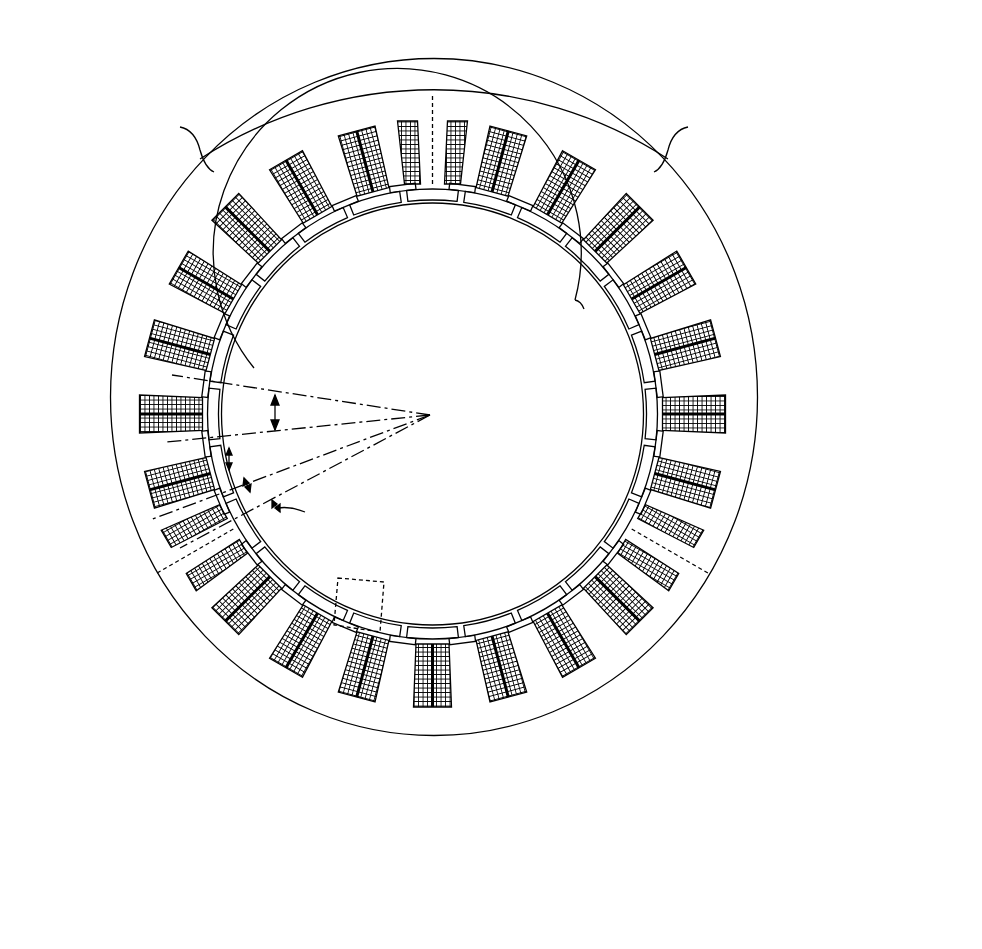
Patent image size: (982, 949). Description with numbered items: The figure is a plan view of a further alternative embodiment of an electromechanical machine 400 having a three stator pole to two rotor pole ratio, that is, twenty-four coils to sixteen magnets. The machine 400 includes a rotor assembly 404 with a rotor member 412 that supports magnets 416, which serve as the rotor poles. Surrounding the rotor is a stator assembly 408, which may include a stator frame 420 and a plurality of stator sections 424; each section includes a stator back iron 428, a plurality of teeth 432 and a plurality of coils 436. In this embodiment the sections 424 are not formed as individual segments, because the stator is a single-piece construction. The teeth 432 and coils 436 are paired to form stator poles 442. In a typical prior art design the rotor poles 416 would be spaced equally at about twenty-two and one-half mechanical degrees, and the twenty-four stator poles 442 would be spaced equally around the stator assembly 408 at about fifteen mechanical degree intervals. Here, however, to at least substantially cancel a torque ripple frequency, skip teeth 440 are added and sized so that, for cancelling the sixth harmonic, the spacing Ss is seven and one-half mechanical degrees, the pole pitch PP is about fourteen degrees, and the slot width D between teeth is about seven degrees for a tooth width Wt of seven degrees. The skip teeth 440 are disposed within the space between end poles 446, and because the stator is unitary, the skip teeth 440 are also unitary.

The machine 400 is at (607, 67).
The rotor assembly 404 is at (463, 244).
The stator assembly 408 is at (682, 152).
The rotor member 412 is at (468, 226).
The magnets 416 is at (350, 210).
The stator frame 420 is at (418, 88).
The stator sections 424 is at (168, 216).
The stator back iron 428 is at (182, 264).
The teeth 432 is at (160, 308).
The coils 436 is at (175, 373).
The skip teeth 440 is at (440, 185).
The stator poles 442 is at (372, 575).
The end poles 446 is at (232, 513).